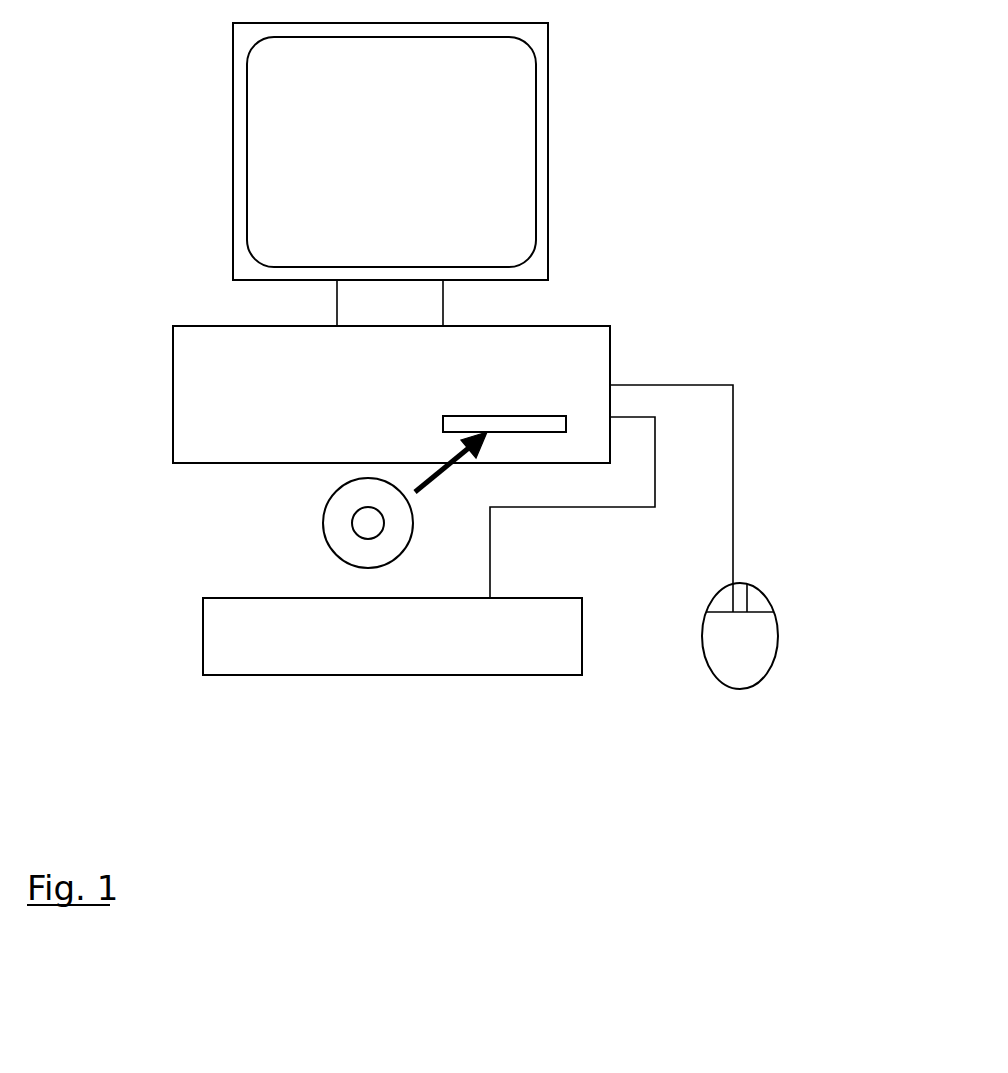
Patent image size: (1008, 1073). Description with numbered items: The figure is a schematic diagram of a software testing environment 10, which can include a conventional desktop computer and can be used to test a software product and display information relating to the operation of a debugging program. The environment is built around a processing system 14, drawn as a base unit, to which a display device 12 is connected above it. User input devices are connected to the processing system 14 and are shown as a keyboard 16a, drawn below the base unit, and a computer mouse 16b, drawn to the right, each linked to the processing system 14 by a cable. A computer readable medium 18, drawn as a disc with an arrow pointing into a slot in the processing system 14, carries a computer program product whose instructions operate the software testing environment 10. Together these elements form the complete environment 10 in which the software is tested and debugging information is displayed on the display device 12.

The software testing environment 10 is at (740, 120).
The display device 12 is at (233, 129).
The processing system 14 is at (173, 386).
The keyboard 16a is at (203, 630).
The computer mouse 16b is at (778, 643).
The computer readable medium 18 is at (323, 507).